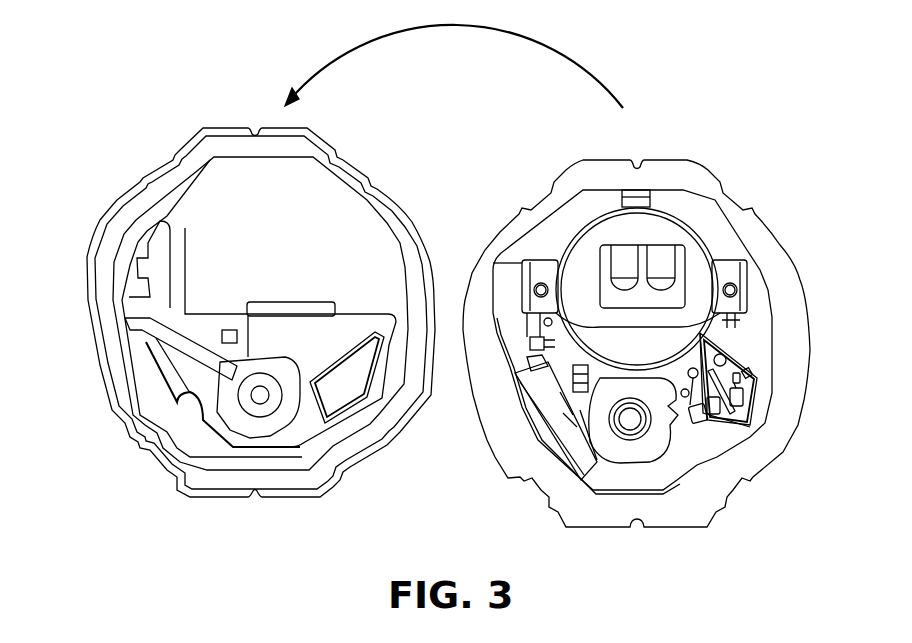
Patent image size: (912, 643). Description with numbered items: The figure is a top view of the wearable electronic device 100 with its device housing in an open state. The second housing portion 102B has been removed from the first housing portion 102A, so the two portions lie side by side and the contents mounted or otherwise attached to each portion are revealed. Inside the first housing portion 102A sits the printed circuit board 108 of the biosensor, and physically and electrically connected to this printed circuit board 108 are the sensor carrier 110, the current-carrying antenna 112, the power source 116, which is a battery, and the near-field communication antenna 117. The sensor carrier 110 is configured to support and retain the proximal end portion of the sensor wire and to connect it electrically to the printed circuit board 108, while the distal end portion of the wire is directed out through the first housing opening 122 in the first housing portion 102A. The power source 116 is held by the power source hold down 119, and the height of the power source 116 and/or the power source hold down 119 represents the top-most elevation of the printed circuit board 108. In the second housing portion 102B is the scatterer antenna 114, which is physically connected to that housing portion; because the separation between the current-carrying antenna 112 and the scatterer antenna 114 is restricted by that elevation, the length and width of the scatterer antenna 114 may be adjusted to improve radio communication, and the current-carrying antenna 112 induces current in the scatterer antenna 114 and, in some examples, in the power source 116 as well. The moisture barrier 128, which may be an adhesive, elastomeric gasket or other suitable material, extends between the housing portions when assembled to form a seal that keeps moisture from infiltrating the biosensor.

The wearable electronic device 100 is at (754, 72).
The first housing portion 102A is at (752, 222).
The second housing portion 102B is at (200, 183).
The printed circuit board 108 is at (753, 343).
The sensor carrier 110 is at (755, 393).
The current-carrying antenna 112 is at (533, 418).
The scatterer antenna 114 is at (188, 410).
The power source 116 is at (683, 343).
The near-field communication antenna 117 is at (745, 423).
The power source hold down 119 is at (705, 283).
The first housing opening 122 is at (630, 425).
The moisture barrier 128 is at (133, 333).